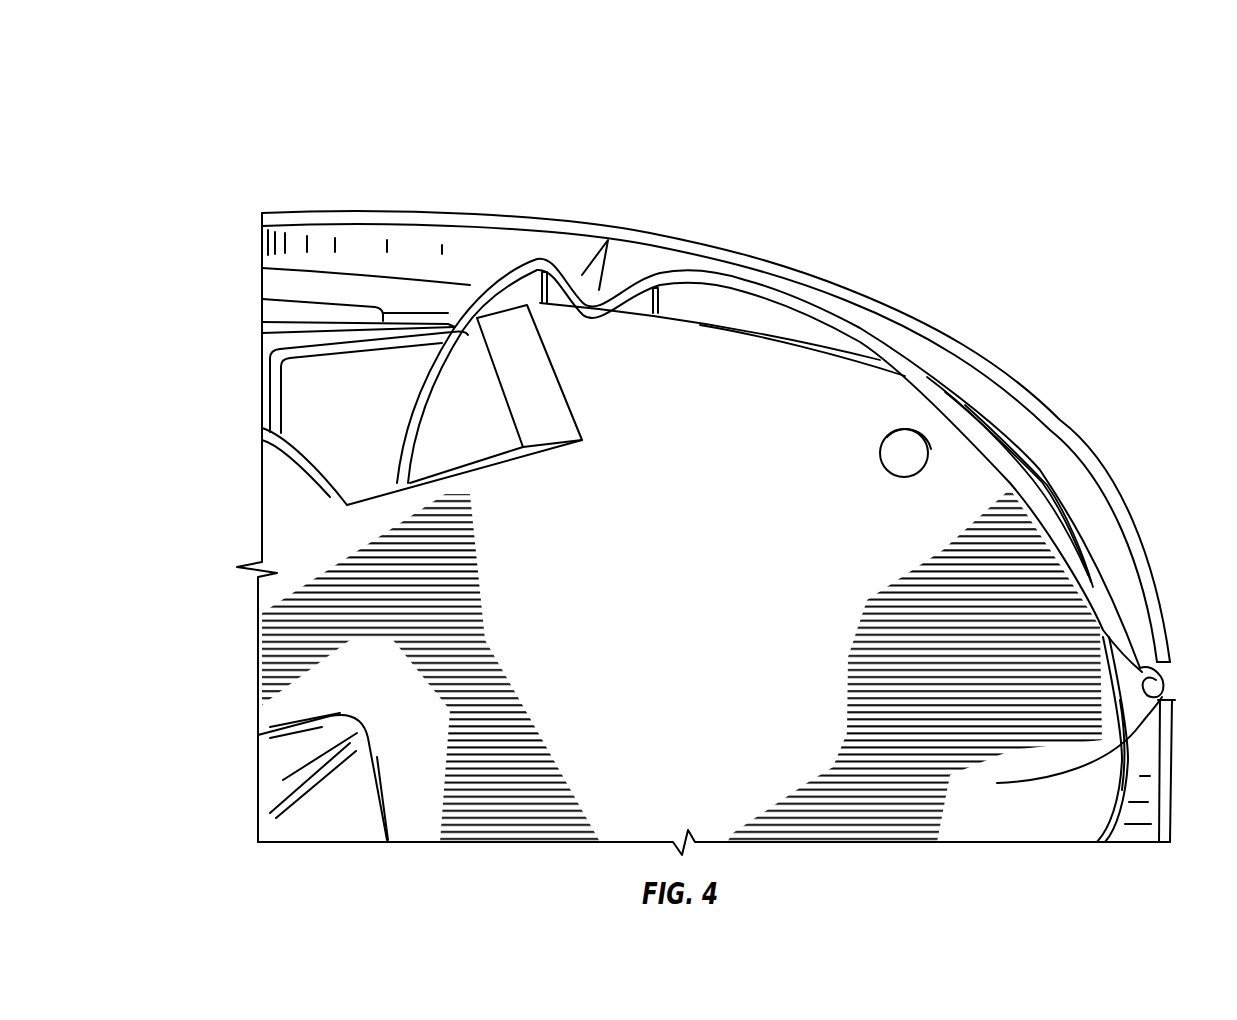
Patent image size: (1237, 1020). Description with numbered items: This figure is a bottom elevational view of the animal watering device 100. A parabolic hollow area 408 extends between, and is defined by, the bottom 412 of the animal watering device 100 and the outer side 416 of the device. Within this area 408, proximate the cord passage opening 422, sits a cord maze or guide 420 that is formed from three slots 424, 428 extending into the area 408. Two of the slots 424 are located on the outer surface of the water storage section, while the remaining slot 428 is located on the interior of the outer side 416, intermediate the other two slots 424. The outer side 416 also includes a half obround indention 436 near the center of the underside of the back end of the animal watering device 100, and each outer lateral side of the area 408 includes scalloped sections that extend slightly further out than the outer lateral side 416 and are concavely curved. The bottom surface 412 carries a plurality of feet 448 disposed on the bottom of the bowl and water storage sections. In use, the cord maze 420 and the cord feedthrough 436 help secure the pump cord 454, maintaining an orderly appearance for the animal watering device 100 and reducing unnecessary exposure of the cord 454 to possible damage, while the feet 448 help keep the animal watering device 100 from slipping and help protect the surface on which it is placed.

The animal watering device 100 is at (792, 98).
The parabolic hollow area 408 is at (1050, 455).
The bottom 412 is at (998, 632).
The outer side 416 is at (808, 278).
The cord maze 420 is at (623, 338).
The cord passage opening 422 is at (448, 433).
The slots 424 is at (530, 293).
The slot 428 is at (585, 262).
The half obround indention 436 is at (997, 783).
The feet 448 is at (893, 464).
The pump cord 454 is at (405, 403).